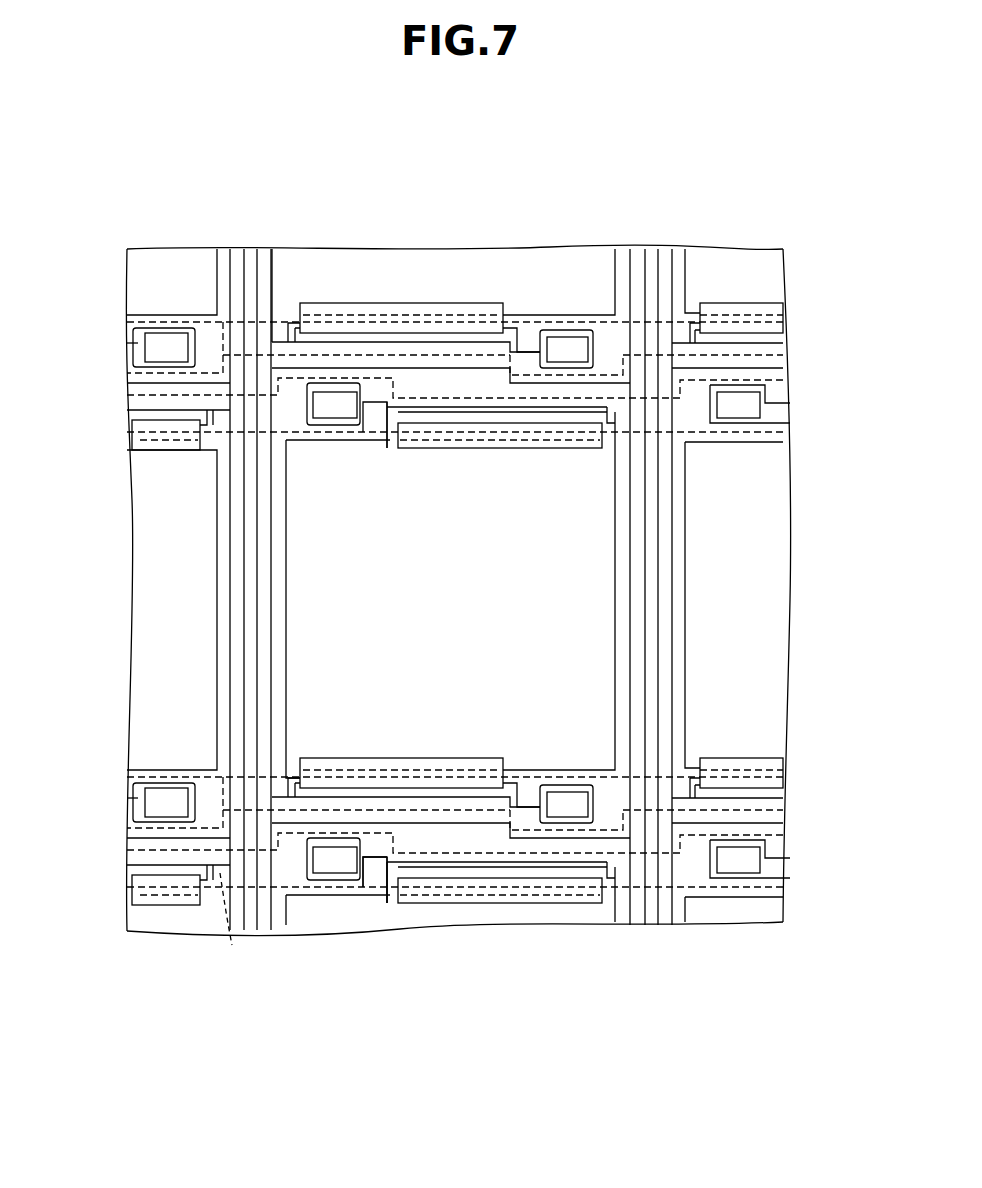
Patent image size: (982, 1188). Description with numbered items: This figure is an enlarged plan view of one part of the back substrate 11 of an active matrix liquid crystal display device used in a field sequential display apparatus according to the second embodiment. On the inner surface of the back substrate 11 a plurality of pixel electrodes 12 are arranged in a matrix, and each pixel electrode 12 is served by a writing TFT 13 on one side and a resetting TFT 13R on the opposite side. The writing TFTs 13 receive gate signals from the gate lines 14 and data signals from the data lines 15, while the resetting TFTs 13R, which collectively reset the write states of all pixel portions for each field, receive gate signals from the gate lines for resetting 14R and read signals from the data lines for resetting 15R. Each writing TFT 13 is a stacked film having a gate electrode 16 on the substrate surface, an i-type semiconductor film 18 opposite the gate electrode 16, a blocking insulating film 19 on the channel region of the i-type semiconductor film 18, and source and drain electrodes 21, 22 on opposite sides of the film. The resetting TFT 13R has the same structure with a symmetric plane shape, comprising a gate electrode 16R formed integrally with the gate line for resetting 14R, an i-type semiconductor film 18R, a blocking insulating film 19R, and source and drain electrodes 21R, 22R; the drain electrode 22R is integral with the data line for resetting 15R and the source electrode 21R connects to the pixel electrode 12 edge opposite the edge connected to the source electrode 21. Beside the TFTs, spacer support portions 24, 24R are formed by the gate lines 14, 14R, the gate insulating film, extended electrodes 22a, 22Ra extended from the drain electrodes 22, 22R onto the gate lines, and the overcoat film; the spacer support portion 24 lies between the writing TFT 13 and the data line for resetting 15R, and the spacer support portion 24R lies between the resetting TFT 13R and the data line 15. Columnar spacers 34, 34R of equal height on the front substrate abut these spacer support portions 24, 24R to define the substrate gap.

The first substrate (back substrate) 11 is at (760, 256).
The pixel electrode 12 is at (500, 262).
The TFT 13 is at (336, 300).
The gate line 14 is at (210, 333).
The data line 15 is at (262, 631).
The gate electrode 16 is at (362, 310).
The i-type semiconductor film 18 is at (280, 330).
The blocking insulating film 19 is at (426, 335).
The source electrode 21 is at (400, 302).
The drain electrode 22 is at (462, 346).
The extended electrode 22a is at (566, 338).
The spacer support portion 24 is at (528, 330).
The columnar spacer 34 is at (145, 344).
The resetting TFT 13R is at (155, 452).
The gate line for resetting 14R is at (275, 410).
The data line for resetting 15R is at (237, 630).
The gate electrode 16R is at (436, 447).
The i-type semiconductor film 18R is at (608, 398).
The blocking insulating film 19R is at (525, 412).
The source electrode 21R is at (545, 441).
The drain electrode 22R is at (388, 408).
The extended electrode 22Ra is at (376, 864).
The spacer support portion 24R is at (372, 412).
The columnar spacer 34R is at (740, 412).